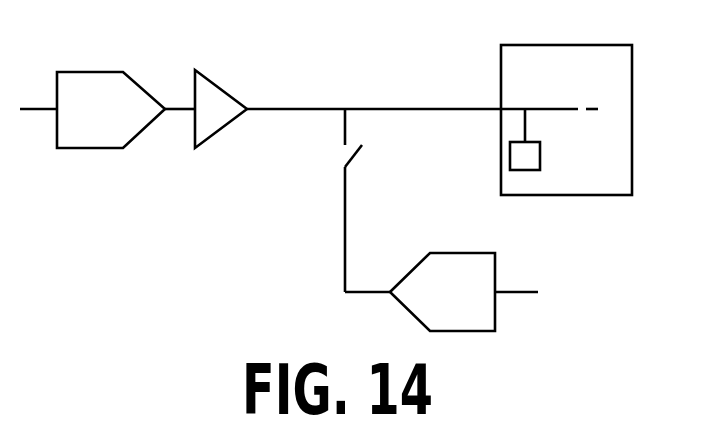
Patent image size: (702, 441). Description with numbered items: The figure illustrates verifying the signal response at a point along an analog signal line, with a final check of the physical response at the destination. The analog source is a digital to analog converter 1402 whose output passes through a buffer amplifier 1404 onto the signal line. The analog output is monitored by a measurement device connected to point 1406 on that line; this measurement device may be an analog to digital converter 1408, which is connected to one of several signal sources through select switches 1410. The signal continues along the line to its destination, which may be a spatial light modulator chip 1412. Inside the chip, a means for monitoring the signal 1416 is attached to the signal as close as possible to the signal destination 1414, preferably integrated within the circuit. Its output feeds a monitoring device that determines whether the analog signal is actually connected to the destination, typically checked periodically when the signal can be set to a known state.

The digital to analog converter 1402 is at (92, 72).
The buffer amplifier 1404 is at (213, 81).
The point 1406 is at (332, 90).
The analog to digital converter 1408 is at (445, 253).
The select switches 1410 is at (383, 175).
The spatial light modulator chip 1412 is at (559, 45).
The signal destination 1414 is at (613, 88).
The means for monitoring the signal 1416 is at (568, 157).